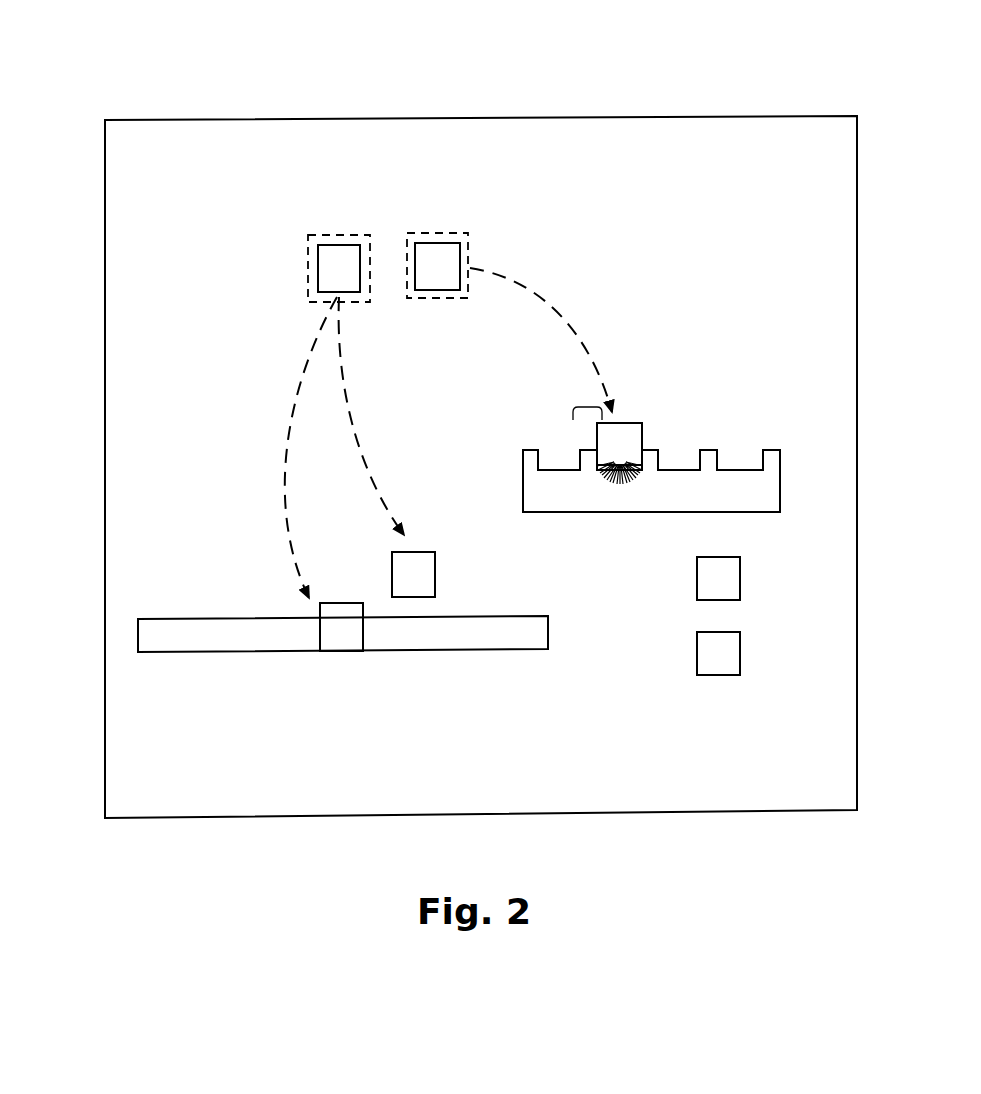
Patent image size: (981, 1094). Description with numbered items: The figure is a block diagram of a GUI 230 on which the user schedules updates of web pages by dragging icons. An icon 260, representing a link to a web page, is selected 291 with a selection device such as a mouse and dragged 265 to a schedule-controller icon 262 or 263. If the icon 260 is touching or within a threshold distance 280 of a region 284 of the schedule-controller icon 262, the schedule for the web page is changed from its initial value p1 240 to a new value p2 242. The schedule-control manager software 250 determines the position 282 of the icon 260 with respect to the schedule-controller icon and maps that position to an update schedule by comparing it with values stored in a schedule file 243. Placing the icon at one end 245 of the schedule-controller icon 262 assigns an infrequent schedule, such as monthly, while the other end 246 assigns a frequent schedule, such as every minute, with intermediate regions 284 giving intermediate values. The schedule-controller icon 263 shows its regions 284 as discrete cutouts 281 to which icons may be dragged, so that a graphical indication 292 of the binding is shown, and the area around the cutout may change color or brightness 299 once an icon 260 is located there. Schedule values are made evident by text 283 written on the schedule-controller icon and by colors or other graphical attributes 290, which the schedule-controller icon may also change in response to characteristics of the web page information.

The GUI 230 is at (388, 112).
The initial value p1 240 is at (318, 295).
The new value p2 242 is at (320, 635).
The schedule file 243 is at (740, 590).
The one end of the SCI 245 is at (138, 634).
The other end of the SCI 246 is at (548, 631).
The schedule-control manager software 250 is at (740, 660).
The icon shortcut 260 is at (436, 230).
The schedule-controller icon 262 is at (558, 618).
The schedule-controller icon 263 is at (786, 478).
The drag 265 is at (353, 442).
The threshold distance 280 is at (440, 656).
The cutouts 281 is at (685, 458).
The position of icon 282 is at (632, 423).
The text 283 is at (623, 512).
The regions 284 is at (670, 457).
The graphical attribute 290 is at (198, 637).
The select 291 is at (308, 274).
The graphical indication 292 is at (588, 405).
The change of color or brightness 299 is at (597, 455).